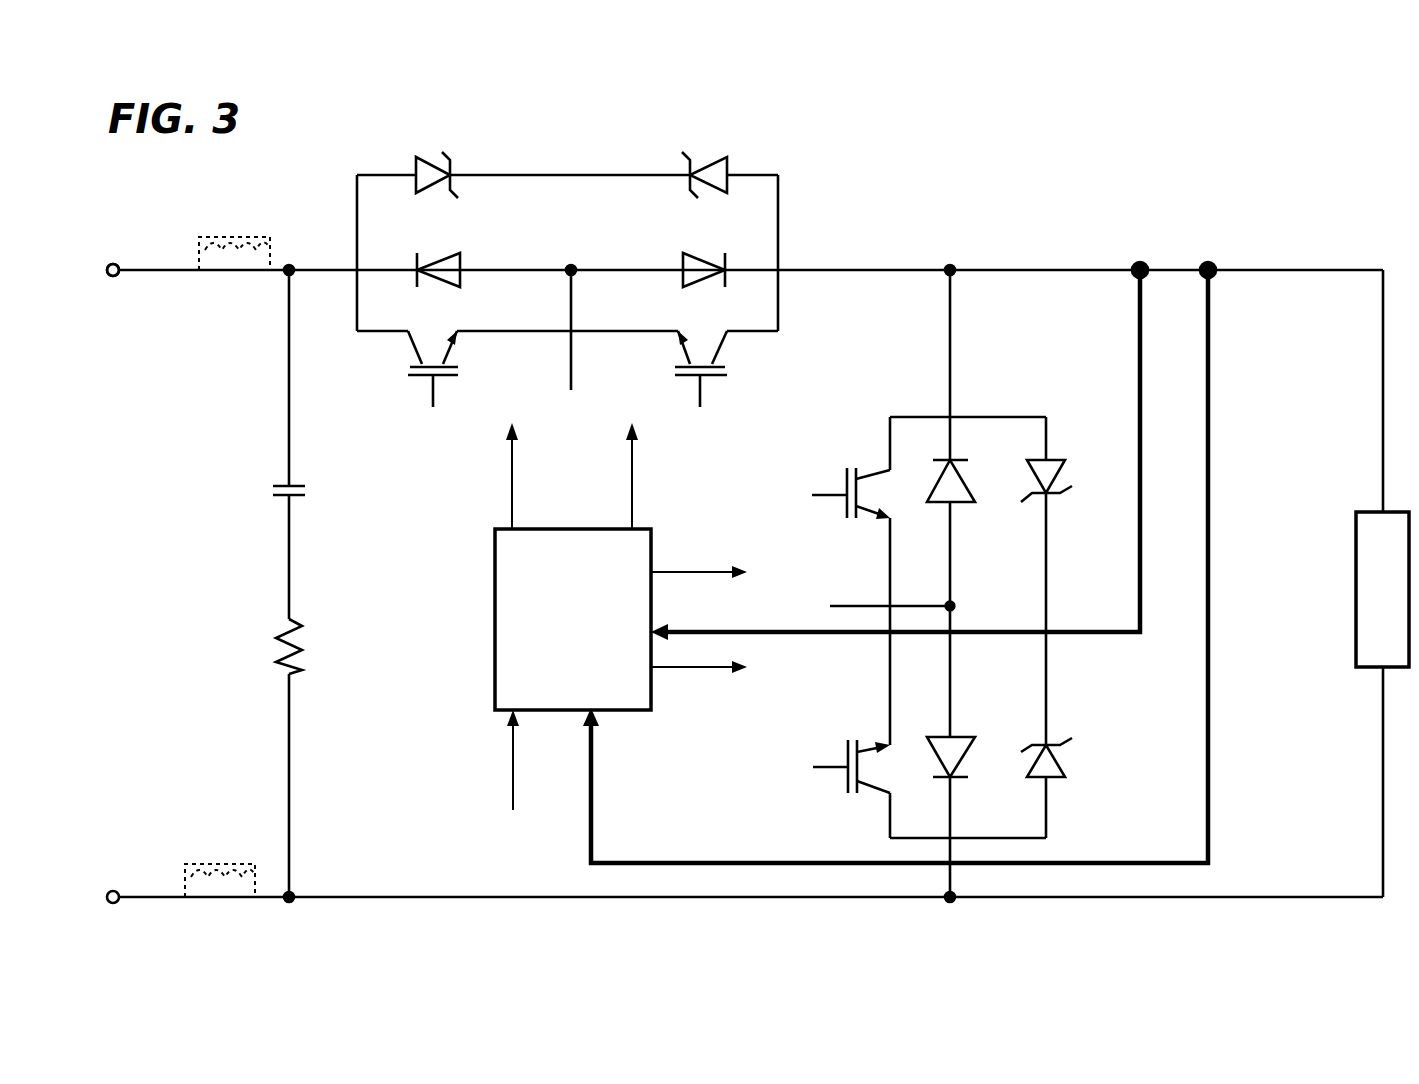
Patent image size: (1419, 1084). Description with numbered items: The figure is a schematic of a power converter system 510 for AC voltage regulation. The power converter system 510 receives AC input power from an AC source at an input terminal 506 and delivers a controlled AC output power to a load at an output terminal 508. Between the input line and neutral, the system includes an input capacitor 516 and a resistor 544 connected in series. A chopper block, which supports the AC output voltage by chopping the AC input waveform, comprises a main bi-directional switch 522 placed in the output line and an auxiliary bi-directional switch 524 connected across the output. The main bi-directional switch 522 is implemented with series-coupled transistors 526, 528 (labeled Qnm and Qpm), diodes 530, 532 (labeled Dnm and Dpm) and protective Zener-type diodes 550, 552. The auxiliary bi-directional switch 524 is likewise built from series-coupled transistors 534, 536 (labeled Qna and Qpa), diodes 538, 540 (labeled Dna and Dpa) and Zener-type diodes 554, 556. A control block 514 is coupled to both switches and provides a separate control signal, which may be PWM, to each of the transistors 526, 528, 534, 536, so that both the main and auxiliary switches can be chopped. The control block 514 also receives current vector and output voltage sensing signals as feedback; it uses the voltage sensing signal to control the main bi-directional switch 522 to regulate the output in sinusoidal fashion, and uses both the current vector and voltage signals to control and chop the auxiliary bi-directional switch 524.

The input terminal 506 is at (178, 275).
The output terminal 508 is at (1357, 268).
The power converter system 510 is at (187, 183).
The control block 514 is at (495, 620).
The input capacitor 516 is at (279, 499).
The main bi-directional switch 522 is at (778, 213).
The auxiliary bi-directional switch 524 is at (988, 416).
The transistor 526 is at (727, 378).
The transistor 528 is at (408, 378).
The diode 530 is at (703, 252).
The diode 532 is at (447, 252).
The transistor 534 is at (845, 469).
The transistor 536 is at (845, 741).
The diode 538 is at (960, 505).
The diode 540 is at (957, 736).
The resistor 544 is at (285, 676).
The zener diode 550 is at (434, 157).
The zener diode 552 is at (710, 156).
The diode 554 is at (1052, 460).
The diode 556 is at (1055, 780).